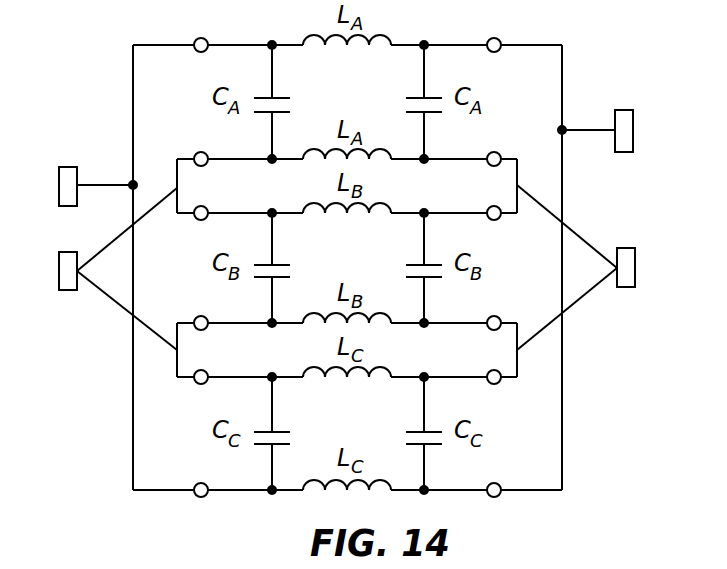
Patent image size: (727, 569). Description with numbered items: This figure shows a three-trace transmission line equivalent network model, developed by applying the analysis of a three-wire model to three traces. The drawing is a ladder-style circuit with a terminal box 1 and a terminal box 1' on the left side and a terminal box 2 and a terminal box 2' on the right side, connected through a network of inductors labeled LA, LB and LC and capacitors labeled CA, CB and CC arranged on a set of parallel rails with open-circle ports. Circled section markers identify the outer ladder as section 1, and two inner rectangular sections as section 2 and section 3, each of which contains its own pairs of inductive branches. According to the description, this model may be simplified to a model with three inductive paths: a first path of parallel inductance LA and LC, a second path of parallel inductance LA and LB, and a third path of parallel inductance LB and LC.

The first terminal / first filter section 1 is at (103, 104).
The first balanced terminal 1' is at (99, 269).
The second terminal / second filter section 2 is at (421, 161).
The second balanced terminal 2' is at (595, 267).
The third filter section 3 is at (347, 350).